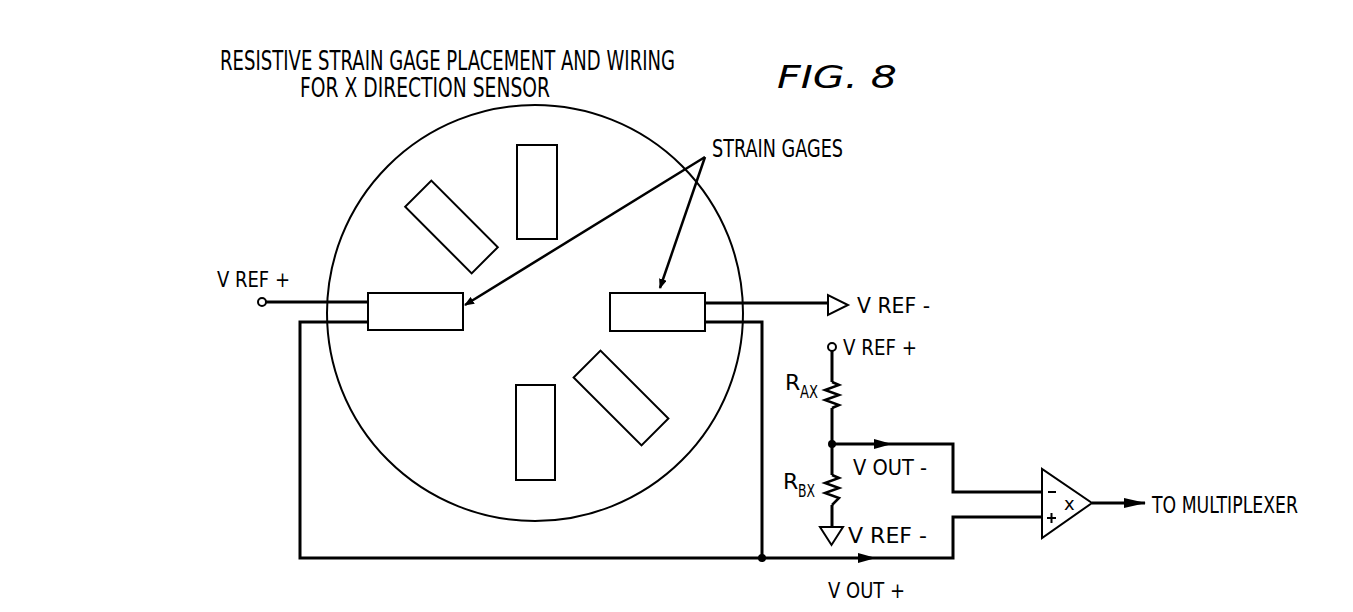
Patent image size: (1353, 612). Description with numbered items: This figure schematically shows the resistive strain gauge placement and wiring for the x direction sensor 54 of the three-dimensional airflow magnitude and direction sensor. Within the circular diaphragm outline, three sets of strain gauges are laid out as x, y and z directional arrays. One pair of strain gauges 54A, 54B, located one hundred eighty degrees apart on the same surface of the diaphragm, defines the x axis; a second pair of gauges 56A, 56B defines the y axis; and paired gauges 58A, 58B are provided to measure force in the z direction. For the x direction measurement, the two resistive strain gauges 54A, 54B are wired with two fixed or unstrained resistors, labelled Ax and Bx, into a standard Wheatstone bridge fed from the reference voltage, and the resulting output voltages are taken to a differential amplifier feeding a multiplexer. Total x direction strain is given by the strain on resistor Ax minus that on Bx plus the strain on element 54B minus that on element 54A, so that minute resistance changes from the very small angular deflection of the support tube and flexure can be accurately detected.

The x direction sensor 54 is at (535, 297).
The strain gauge 54A is at (415, 331).
The strain gauge 54B is at (658, 331).
The strain gauge 56A is at (537, 175).
The strain gauge 56B is at (534, 449).
The strain gauge 58A is at (451, 213).
The strain gauge 58B is at (621, 412).